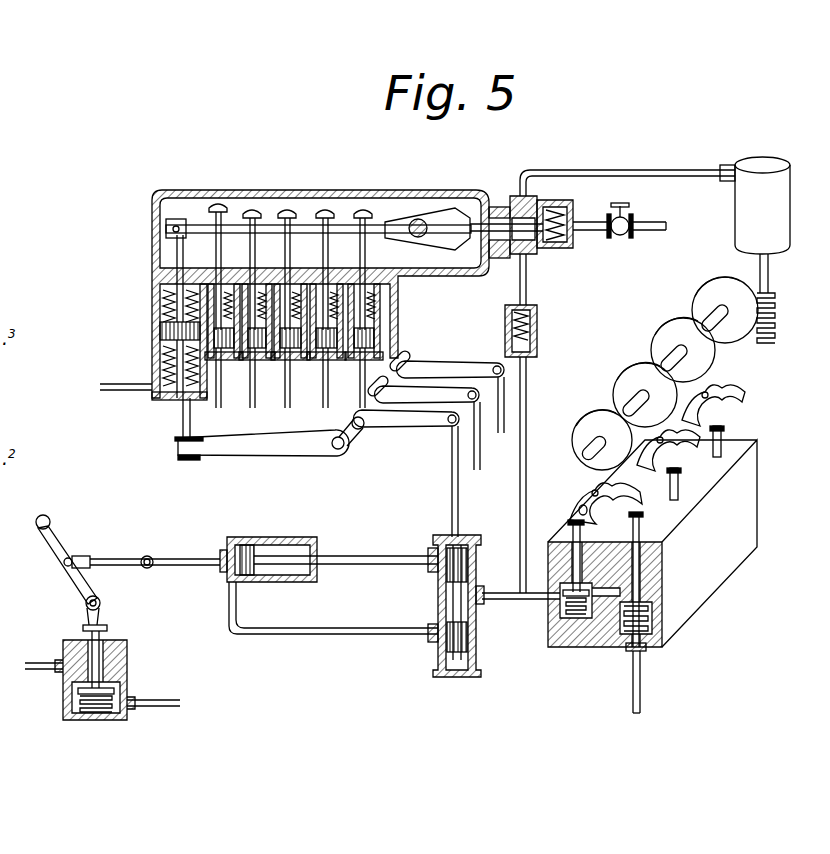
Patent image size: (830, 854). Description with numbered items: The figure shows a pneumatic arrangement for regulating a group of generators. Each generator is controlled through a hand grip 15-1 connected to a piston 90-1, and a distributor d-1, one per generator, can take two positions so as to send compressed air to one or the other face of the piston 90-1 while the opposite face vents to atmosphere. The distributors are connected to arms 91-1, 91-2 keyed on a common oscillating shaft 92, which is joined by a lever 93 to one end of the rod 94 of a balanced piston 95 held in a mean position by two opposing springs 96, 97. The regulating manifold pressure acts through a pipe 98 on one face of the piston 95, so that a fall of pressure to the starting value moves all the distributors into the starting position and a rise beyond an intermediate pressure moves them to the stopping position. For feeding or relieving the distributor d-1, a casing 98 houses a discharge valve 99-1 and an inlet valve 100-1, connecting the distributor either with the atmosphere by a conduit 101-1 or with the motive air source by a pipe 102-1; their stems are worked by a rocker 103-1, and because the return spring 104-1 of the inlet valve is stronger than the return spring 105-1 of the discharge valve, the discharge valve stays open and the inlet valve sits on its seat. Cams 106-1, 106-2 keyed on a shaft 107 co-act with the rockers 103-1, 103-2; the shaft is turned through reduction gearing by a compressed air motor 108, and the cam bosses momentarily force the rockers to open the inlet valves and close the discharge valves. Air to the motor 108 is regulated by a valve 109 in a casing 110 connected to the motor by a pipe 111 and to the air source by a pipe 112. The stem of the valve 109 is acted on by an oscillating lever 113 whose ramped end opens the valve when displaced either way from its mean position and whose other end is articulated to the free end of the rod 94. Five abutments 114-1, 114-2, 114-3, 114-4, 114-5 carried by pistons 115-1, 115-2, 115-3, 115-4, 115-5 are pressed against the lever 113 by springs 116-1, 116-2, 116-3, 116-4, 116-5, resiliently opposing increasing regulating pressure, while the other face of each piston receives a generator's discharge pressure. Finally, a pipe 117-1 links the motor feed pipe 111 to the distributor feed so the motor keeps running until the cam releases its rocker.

The hand grip 15-1 is at (58, 542).
The piston 90-1 is at (248, 558).
The arm 91-1 is at (421, 420).
The arm 91-2 is at (455, 392).
The oscillating shaft 92 is at (358, 432).
The lever 93 is at (284, 448).
The rod 94 is at (182, 428).
The piston 95 is at (160, 330).
The spring 96 is at (160, 358).
The spring 97 is at (152, 290).
The pipe 98 is at (126, 392).
The discharge valve 99-1 is at (556, 605).
The inlet valve 100-1 is at (648, 605).
The conduit 101-1 is at (560, 540).
The pipe 102-1 is at (642, 684).
The rocker 103-1 is at (680, 475).
The rocker 103-2 is at (715, 420).
The return spring 104-1 is at (652, 625).
The return spring 105-1 is at (570, 648).
The cam 106-1 is at (600, 420).
The cam 106-2 is at (648, 372).
The shaft 107 is at (680, 335).
The compressed air motor 108 is at (745, 212).
The valve 109 is at (560, 248).
The casing 110 is at (618, 208).
The pipe 111 is at (618, 170).
The pipe 112 is at (648, 222).
The oscillating lever 113 is at (410, 218).
The abutment 114-1 is at (212, 200).
The abutment 114-2 is at (248, 205).
The abutment 114-3 is at (283, 205).
The abutment 114-4 is at (322, 205).
The abutment 114-5 is at (364, 205).
The piston 115-1 is at (162, 305).
The piston 115-2 is at (228, 205).
The piston 115-3 is at (300, 340).
The piston 115-4 is at (337, 340).
The piston 115-5 is at (400, 330).
The spring 116-1 is at (166, 229).
The spring 116-2 is at (250, 345).
The spring 116-3 is at (300, 345).
The spring 116-4 is at (395, 342).
The spring 116-5 is at (392, 300).
The pipe 117-1 is at (528, 420).
The distributor d-1 is at (470, 568).